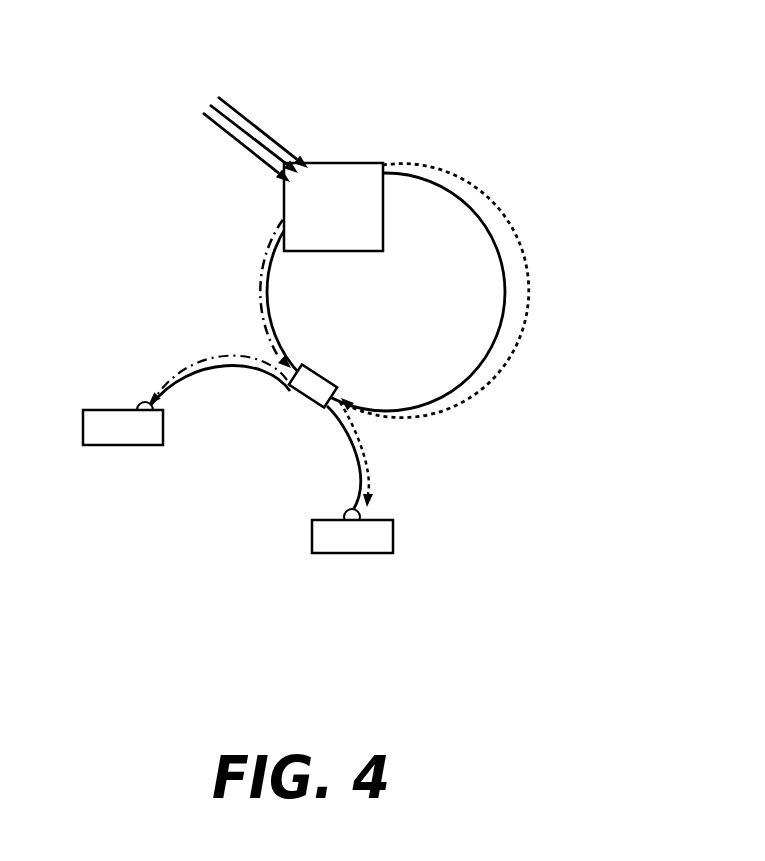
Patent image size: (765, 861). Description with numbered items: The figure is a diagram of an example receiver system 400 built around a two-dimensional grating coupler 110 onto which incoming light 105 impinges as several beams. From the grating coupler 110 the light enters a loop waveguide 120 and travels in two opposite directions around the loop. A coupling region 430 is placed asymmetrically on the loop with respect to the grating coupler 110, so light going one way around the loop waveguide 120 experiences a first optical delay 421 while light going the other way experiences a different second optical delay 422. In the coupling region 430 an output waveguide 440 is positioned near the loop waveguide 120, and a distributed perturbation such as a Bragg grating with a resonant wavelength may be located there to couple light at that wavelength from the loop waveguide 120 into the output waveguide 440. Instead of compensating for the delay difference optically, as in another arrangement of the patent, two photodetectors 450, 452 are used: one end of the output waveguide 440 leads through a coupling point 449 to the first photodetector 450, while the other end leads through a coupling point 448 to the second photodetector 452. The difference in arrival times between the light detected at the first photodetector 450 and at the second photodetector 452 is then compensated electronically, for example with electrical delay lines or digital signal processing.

The receiver system 400 is at (167, 48).
The input light 105 is at (245, 123).
The two-dimensional grating coupler 110 is at (360, 163).
The loop waveguide 120 is at (448, 189).
The first optical delay L1 421 is at (510, 254).
The second optical delay L2 422 is at (273, 236).
The coupling region 430 is at (336, 384).
The output waveguide 440 is at (363, 486).
The coupling point to photodetector 448 is at (150, 418).
The coupling point to photodetector 449 is at (352, 514).
The first photodetector 450 is at (393, 534).
The second photodetector 452 is at (99, 412).